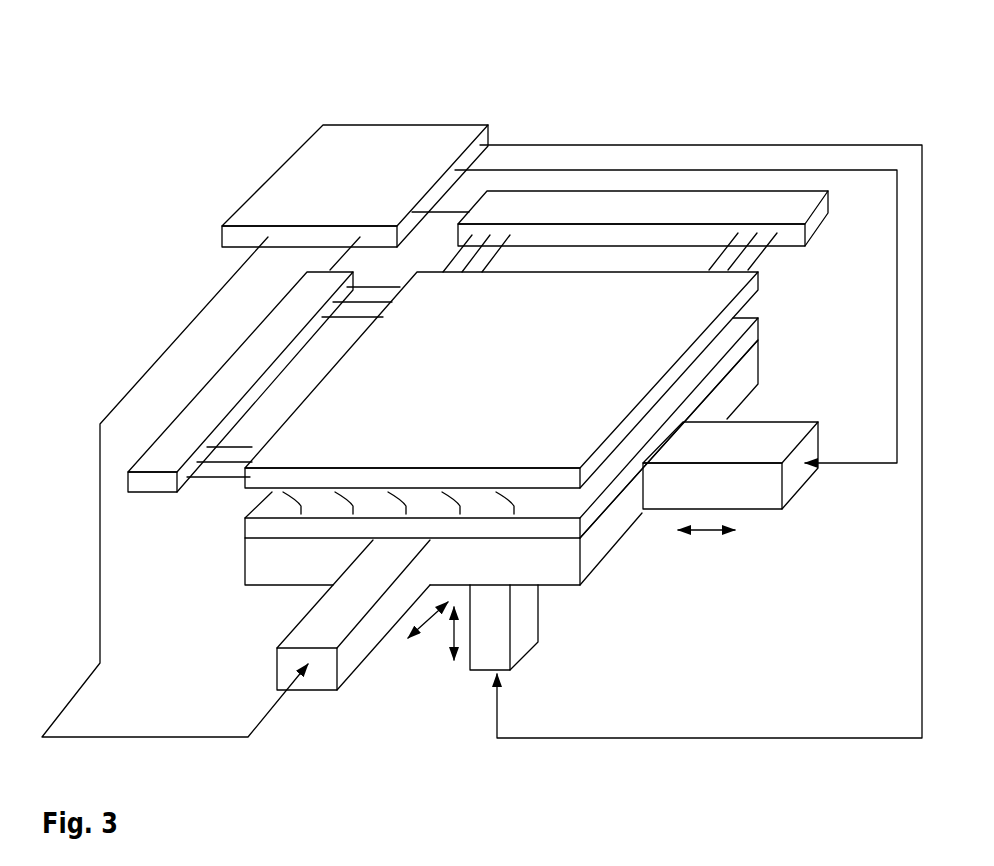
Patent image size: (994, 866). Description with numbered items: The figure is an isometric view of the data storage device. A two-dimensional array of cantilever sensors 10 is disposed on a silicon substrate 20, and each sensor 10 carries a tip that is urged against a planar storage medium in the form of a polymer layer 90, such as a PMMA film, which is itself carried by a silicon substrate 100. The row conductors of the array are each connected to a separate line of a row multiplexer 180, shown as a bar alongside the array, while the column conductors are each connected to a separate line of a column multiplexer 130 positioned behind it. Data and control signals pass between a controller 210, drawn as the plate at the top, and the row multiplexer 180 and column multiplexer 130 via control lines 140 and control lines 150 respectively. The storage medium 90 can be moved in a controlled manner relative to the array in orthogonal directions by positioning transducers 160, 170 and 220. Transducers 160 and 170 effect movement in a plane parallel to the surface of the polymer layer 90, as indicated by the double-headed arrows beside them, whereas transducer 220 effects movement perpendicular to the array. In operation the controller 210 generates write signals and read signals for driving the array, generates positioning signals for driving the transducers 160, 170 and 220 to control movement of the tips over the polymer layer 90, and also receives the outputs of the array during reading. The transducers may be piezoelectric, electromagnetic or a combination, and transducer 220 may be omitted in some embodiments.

The cantilever sensor 10 is at (508, 505).
The substrate 20 is at (755, 290).
The polymer layer 90 is at (243, 528).
The silicon substrate 100 is at (243, 570).
The column multiplexer 130 is at (823, 224).
The control lines 140 is at (330, 270).
The control lines 150 is at (480, 195).
The positioning transducer 160 is at (288, 622).
The positioning transducer 170 is at (765, 502).
The row multiplexer 180 is at (250, 332).
The controller 210 is at (418, 125).
The positioning transducer 220 is at (522, 650).